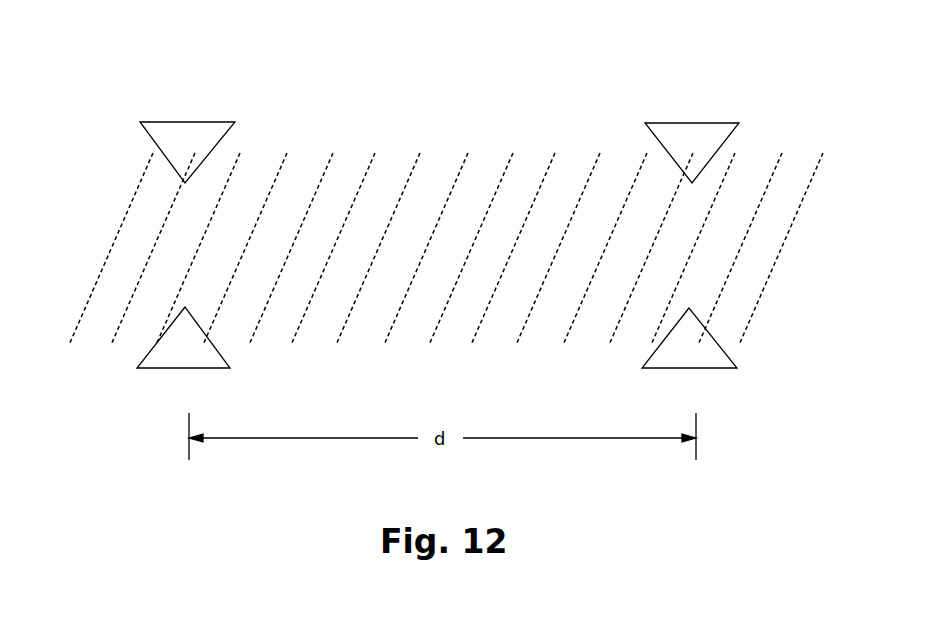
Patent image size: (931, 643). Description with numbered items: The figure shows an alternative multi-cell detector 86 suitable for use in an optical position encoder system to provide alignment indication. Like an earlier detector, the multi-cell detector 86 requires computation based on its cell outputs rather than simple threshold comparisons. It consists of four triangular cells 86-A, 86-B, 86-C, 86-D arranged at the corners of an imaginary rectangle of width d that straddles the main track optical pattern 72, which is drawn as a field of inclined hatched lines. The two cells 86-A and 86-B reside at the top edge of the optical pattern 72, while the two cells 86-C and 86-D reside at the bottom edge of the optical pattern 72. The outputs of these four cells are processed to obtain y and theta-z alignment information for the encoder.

The main track optical pattern 72 is at (446, 230).
The multi-cell detector 86 is at (433, 219).
The triangular cell 86-A is at (146, 129).
The triangular cell 86-B is at (144, 361).
The triangular cell 86-C is at (717, 130).
The triangular cell 86-D is at (725, 355).